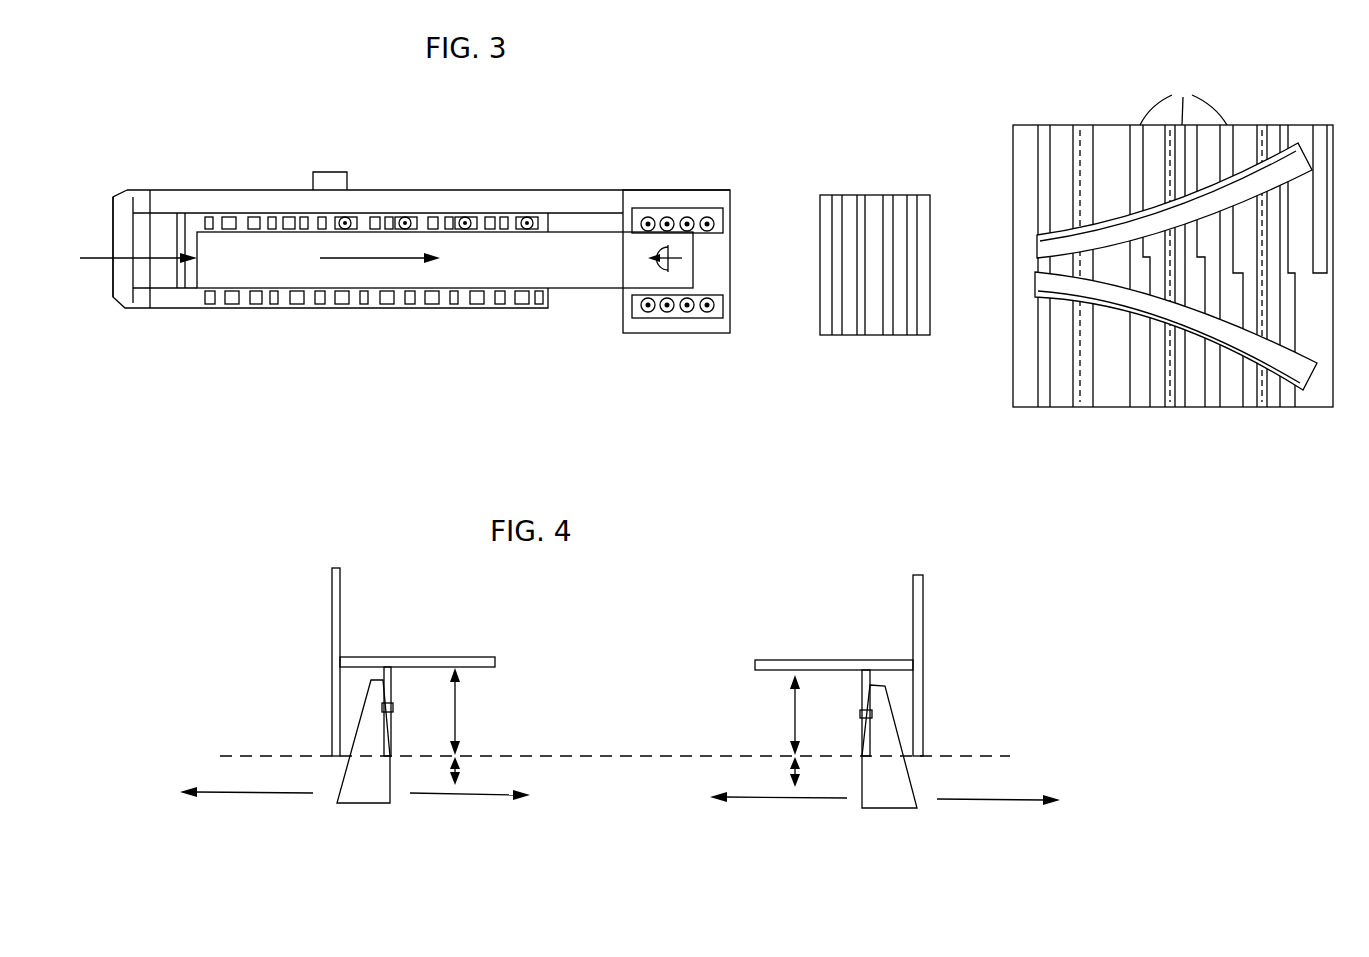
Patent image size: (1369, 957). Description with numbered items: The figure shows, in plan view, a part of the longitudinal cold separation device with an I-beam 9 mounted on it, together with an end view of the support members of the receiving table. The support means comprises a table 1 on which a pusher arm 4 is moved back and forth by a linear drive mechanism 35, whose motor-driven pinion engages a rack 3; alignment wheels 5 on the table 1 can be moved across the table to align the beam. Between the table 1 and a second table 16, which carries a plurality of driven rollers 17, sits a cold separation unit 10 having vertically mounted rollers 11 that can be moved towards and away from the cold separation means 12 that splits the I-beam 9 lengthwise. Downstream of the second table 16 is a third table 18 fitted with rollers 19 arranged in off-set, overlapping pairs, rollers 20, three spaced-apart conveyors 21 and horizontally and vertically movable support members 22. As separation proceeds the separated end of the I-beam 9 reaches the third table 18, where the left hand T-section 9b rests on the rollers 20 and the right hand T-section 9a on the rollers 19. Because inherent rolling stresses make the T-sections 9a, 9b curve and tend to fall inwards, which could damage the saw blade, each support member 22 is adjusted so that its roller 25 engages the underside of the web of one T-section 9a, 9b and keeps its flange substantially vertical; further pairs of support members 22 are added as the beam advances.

In FIG. 3, the table 1 is at (367, 320).
In FIG. 3, the rack 3 is at (283, 200).
In FIG. 3, the pusher arm 4 is at (116, 196).
In FIG. 3, the alignment wheels 5 is at (524, 218).
In FIG. 3, the I-beam 9 is at (276, 250).
In FIG. 3, the right hand T-section 9a is at (1035, 297).
In FIG. 4, the right hand T-section 9a is at (332, 632).
In FIG. 3, the left hand T-section 9b is at (1037, 236).
In FIG. 4, the left hand T-section 9b is at (923, 632).
In FIG. 3, the cold separation unit 10 is at (669, 352).
In FIG. 3, the vertically mounted rollers 11 is at (707, 216).
In FIG. 3, the cold separation means 12 is at (682, 257).
In FIG. 3, the second table 16 is at (861, 358).
In FIG. 3, the driven rollers 17 is at (900, 215).
In FIG. 3, the third table 18 is at (1220, 425).
In FIG. 3, the rollers 19 is at (1096, 380).
In FIG. 3, the rollers 20 is at (1183, 97).
In FIG. 3, the conveyors 21 is at (1067, 372).
In FIG. 4, the support members 22 is at (362, 790).
In FIG. 4, the roller 25 is at (383, 737).
In FIG. 3, the linear drive mechanism 35 is at (328, 172).